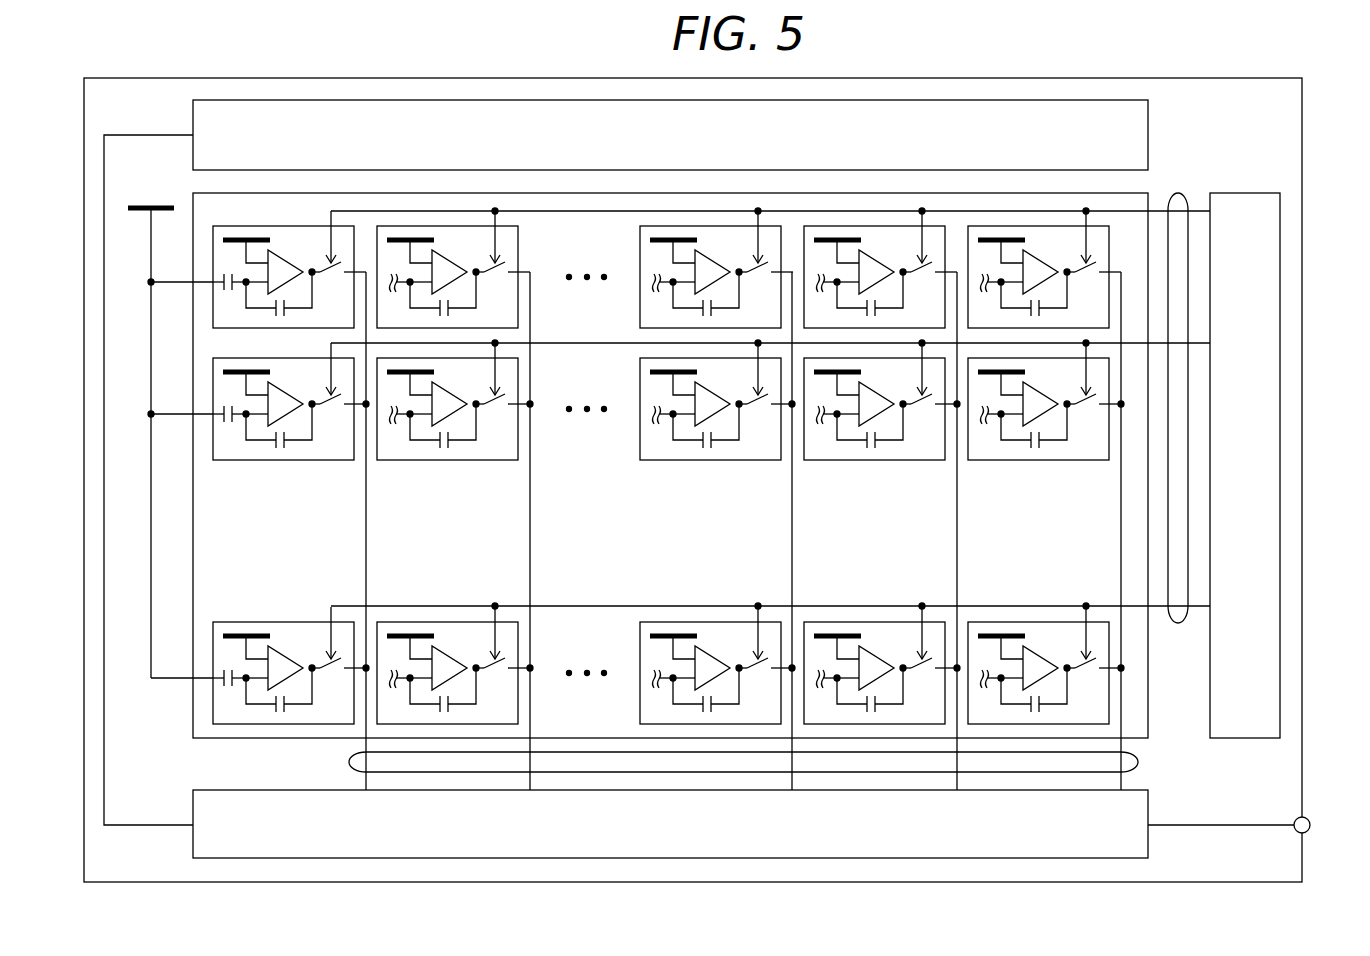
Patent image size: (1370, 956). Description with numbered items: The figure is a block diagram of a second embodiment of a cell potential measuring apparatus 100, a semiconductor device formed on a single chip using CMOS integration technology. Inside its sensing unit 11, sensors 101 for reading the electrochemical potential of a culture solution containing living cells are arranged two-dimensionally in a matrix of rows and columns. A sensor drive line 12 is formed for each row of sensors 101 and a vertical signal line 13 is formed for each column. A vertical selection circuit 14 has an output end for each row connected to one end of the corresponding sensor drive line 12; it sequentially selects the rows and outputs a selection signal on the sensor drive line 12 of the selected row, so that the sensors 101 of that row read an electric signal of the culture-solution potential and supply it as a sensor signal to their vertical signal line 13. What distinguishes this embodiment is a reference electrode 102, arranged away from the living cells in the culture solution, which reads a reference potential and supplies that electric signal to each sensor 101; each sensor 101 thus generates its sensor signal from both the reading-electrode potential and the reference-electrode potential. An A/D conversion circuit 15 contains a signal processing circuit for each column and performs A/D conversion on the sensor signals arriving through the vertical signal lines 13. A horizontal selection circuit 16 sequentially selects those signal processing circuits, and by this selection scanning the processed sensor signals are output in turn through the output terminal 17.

The cell potential measuring apparatus 100 is at (1302, 478).
The sensor 101 is at (233, 226).
The reference electrode 102 is at (150, 208).
The sensing unit 11 is at (642, 418).
The sensor drive line 12 is at (1178, 623).
The vertical signal line 13 is at (348, 762).
The vertical selection circuit 14 is at (1245, 193).
The A/D conversion circuit 15 is at (193, 838).
The horizontal selection circuit 16 is at (1150, 138).
The output terminal 17 is at (1310, 825).